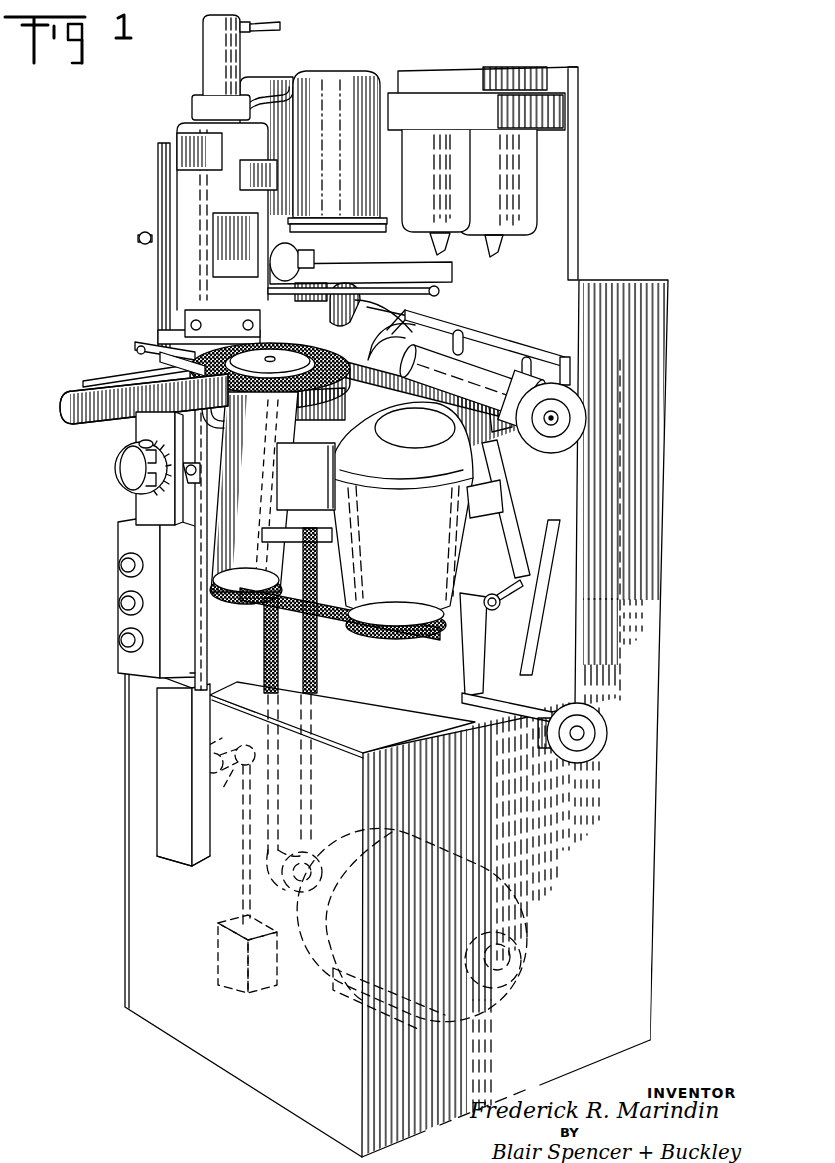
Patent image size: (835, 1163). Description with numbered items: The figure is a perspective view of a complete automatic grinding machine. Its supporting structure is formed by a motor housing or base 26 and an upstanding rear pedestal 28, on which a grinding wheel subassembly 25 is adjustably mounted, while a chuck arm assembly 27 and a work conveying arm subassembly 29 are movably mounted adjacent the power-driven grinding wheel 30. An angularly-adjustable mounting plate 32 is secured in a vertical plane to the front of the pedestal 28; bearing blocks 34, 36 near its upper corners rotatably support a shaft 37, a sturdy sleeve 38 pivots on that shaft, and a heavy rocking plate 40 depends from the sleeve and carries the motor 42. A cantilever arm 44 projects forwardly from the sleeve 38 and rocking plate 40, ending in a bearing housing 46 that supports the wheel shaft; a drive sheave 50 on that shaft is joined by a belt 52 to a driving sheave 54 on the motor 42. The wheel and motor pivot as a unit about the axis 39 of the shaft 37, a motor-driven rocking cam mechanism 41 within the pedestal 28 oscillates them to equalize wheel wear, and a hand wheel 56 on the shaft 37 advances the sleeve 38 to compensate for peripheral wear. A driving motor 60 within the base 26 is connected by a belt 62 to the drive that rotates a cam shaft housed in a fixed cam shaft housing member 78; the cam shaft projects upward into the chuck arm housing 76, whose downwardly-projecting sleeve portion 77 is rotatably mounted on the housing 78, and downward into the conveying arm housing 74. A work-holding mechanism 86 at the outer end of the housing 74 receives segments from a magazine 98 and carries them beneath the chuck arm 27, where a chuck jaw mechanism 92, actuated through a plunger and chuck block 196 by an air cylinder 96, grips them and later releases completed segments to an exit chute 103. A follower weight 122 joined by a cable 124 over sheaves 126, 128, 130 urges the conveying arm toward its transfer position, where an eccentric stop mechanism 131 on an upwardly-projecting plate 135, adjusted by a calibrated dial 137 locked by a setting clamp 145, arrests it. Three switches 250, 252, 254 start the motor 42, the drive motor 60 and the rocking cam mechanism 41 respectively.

The grinding wheel subassembly 25 is at (186, 368).
The motor housing or base 26 is at (658, 832).
The chuck arm assembly 27 is at (172, 127).
The rear pedestal 28 is at (672, 322).
The conveying arm subassembly 29 is at (293, 536).
The grinding wheel 30 is at (308, 348).
The angularly-adjustable mounting plate 32 is at (522, 618).
The bearing block 34 is at (415, 326).
The bearing block 36 is at (520, 352).
The shaft 37 is at (551, 428).
The sleeve 38 is at (468, 366).
The axis 39 is at (560, 424).
The rocking plate 40 is at (490, 445).
The rocking cam mechanism 41 is at (628, 512).
The motor 42 is at (432, 536).
The cantilever arm 44 is at (348, 393).
The bearing housing 46 is at (272, 465).
The drive sheave 50 is at (238, 600).
The belt 52 is at (336, 628).
The driving sheave 54 is at (400, 638).
The hand wheel 56 is at (580, 417).
The driving motor 60 is at (322, 975).
The belt 62 is at (264, 665).
The conveying arm housing 74 is at (320, 502).
The chuck arm housing 76 is at (336, 78).
The sleeve portion 77 is at (333, 232).
The cam shaft housing member 78 is at (386, 296).
The work-holding mechanism 86 is at (226, 393).
The chuck jaw mechanism 92 is at (181, 306).
The air cylinder 96 is at (215, 47).
The magazine 98 is at (157, 216).
The exit chute 103 is at (158, 395).
The follower weight 122 is at (215, 958).
The cable 124 is at (240, 862).
The sheave 126 is at (238, 772).
The sheave 128 is at (220, 748).
The sheave 130 is at (186, 441).
The eccentric stop mechanism 131 is at (110, 461).
The upwardly-projecting plate 135 is at (145, 510).
The calibrated dial 137 is at (139, 444).
The setting clamp 145 is at (200, 472).
The chuck block 196 is at (216, 300).
The switch 250 is at (119, 604).
The switch 252 is at (119, 566).
The switch 254 is at (119, 641).